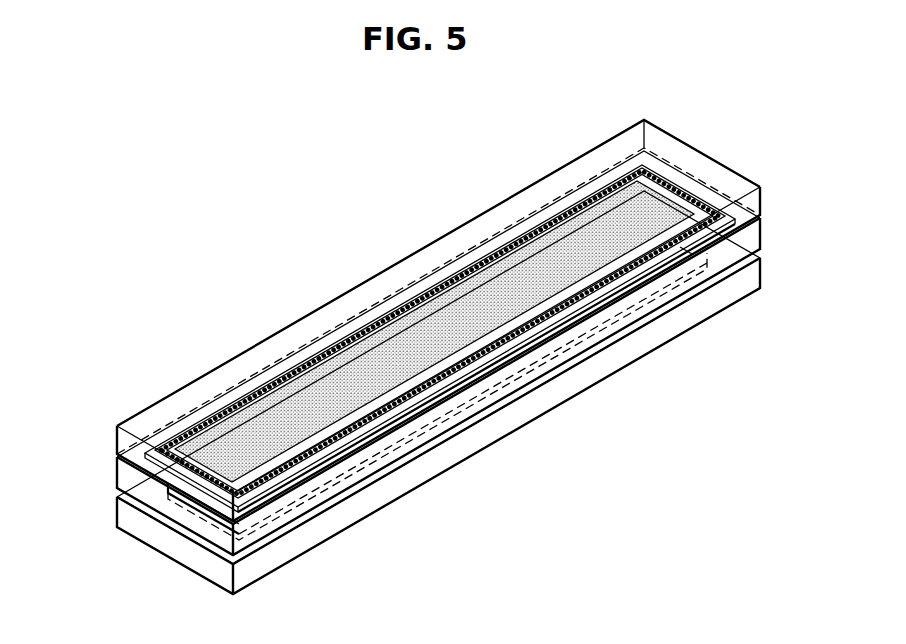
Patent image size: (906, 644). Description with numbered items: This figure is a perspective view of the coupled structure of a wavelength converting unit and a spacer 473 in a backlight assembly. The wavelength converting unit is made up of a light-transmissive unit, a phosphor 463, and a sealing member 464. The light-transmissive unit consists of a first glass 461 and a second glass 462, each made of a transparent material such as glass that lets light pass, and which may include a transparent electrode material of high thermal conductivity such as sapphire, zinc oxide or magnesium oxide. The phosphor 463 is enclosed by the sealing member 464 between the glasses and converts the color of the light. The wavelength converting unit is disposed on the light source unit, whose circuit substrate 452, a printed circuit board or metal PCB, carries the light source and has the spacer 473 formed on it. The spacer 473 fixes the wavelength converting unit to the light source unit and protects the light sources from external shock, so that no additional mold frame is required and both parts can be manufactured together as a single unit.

The circuit substrate 452 is at (268, 563).
The first glass 461 is at (119, 439).
The second glass 462 is at (119, 476).
The phosphor 463 is at (298, 396).
The sealing member 464 is at (224, 404).
The spacer 473 is at (363, 462).